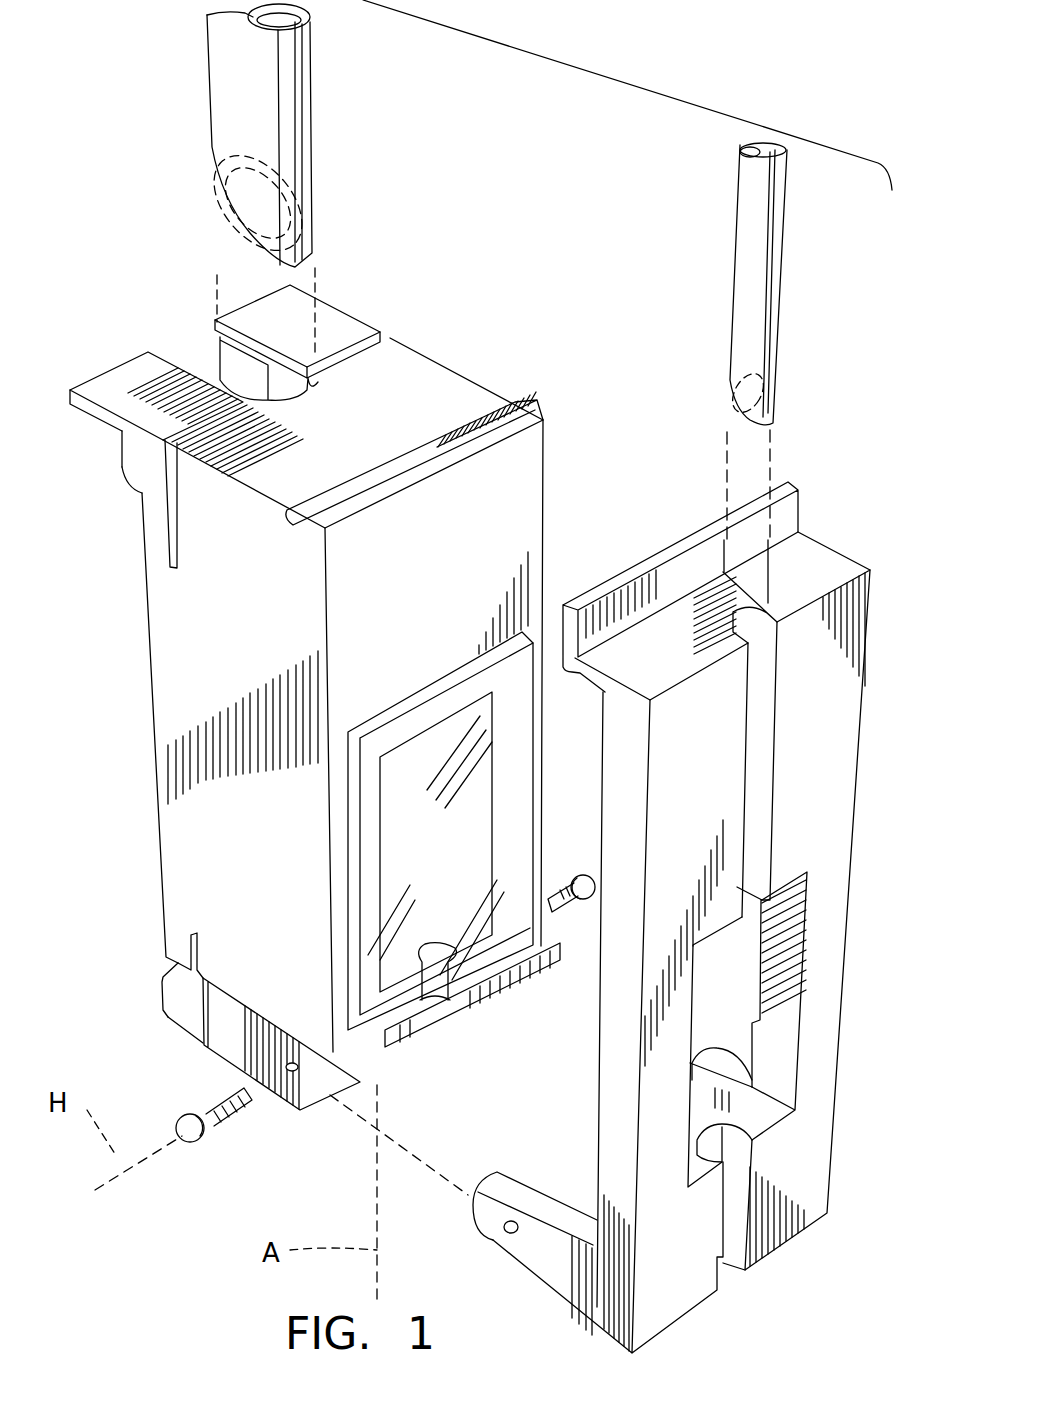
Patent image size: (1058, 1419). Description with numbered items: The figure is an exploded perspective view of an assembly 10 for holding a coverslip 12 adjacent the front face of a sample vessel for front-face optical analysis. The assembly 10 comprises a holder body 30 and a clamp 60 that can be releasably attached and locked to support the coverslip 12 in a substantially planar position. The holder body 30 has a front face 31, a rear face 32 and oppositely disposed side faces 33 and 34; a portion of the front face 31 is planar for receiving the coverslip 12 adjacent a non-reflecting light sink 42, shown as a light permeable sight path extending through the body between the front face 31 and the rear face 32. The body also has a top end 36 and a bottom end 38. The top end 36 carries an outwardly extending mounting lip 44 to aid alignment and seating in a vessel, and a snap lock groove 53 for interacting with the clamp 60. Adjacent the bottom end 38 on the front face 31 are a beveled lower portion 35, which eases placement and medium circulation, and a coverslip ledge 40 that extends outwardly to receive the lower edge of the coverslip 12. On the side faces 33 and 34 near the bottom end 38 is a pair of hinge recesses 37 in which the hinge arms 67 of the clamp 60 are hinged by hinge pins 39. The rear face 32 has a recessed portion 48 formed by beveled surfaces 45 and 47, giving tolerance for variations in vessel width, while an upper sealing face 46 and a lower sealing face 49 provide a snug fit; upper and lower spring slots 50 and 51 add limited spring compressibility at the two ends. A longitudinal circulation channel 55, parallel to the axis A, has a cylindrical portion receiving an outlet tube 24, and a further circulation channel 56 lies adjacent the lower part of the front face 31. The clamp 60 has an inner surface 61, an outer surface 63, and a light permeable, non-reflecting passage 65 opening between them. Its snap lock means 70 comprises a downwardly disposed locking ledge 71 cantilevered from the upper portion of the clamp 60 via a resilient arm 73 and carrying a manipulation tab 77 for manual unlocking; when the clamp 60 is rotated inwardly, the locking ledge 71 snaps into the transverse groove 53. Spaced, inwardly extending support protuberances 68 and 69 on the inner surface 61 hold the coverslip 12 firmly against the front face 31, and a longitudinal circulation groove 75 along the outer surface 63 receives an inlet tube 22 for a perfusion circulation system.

The assembly 10 is at (590, 71).
The coverslip 12 is at (463, 690).
The inlet tube 22 is at (752, 333).
The outlet tube 24 is at (291, 104).
The holder body 30 is at (566, 460).
The front face 31 is at (343, 613).
The rear face 32 is at (148, 678).
The side face 33 is at (264, 824).
The side face 34 is at (547, 517).
The beveled lower portion 35 is at (462, 1012).
The top end 36 is at (402, 352).
The hinge recesses 37 is at (250, 1045).
The bottom end 38 is at (522, 1050).
The hinge pins 39 is at (230, 1112).
The coverslip ledge 40 is at (384, 1070).
The non-reflecting light sink 42 is at (473, 798).
The mounting lip 44 is at (70, 396).
The beveled surface 45 is at (132, 482).
The upper sealing face 46 is at (122, 452).
The beveled surface 47 is at (168, 958).
The recessed portion 48 is at (145, 828).
The lower sealing face 49 is at (160, 1001).
The upper spring slot 50 is at (166, 538).
The lower spring slot 51 is at (193, 1014).
The snap lock groove 53 is at (493, 397).
The circulation channel 55 is at (193, 340).
The circulation channel 56 is at (428, 957).
The clamp 60 is at (862, 972).
The inner surface 61 is at (596, 934).
The outer surface 63 is at (817, 833).
The light permeable passage 65 is at (785, 1017).
The hinge arms 67 is at (700, 1063).
The support protuberance 68 is at (524, 1016).
The support protuberance 69 is at (597, 1128).
The snap lock means 70 is at (560, 738).
The locking ledge 71 is at (578, 678).
The resilient arm 73 is at (816, 556).
The longitudinal circulation groove 75 is at (750, 747).
The manipulation tab 77 is at (784, 500).